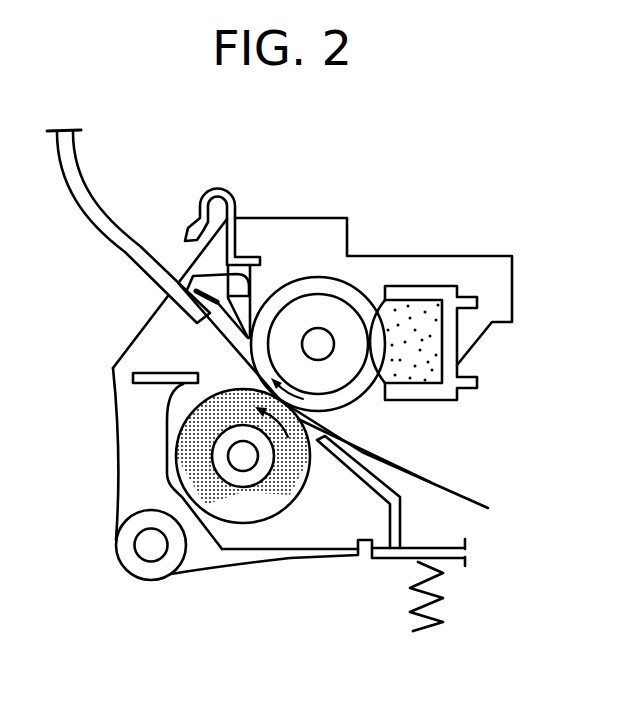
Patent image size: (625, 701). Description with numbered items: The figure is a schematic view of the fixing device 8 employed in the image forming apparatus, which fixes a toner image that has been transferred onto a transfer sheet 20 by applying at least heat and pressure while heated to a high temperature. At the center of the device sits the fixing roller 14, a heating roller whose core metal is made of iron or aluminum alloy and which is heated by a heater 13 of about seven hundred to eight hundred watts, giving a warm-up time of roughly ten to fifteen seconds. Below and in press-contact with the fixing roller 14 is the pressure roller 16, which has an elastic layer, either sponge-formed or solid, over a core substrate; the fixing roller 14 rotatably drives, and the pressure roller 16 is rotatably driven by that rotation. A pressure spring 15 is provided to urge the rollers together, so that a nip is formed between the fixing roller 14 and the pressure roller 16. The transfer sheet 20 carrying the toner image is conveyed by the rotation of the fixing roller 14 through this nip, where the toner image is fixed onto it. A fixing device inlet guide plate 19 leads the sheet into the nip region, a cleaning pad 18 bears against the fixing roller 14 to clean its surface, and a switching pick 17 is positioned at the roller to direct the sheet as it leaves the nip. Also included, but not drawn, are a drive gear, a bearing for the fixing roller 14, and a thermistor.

The fixing device 8 is at (514, 194).
The heater 13 is at (308, 328).
The fixing roller 14 is at (353, 288).
The pressure spring 15 is at (434, 613).
The pressure roller 16 is at (188, 457).
The switching pick 17 is at (194, 275).
The cleaning pad 18 is at (420, 343).
The fixing device inlet guide plate 19 is at (343, 470).
The transfer sheet 20 is at (437, 489).